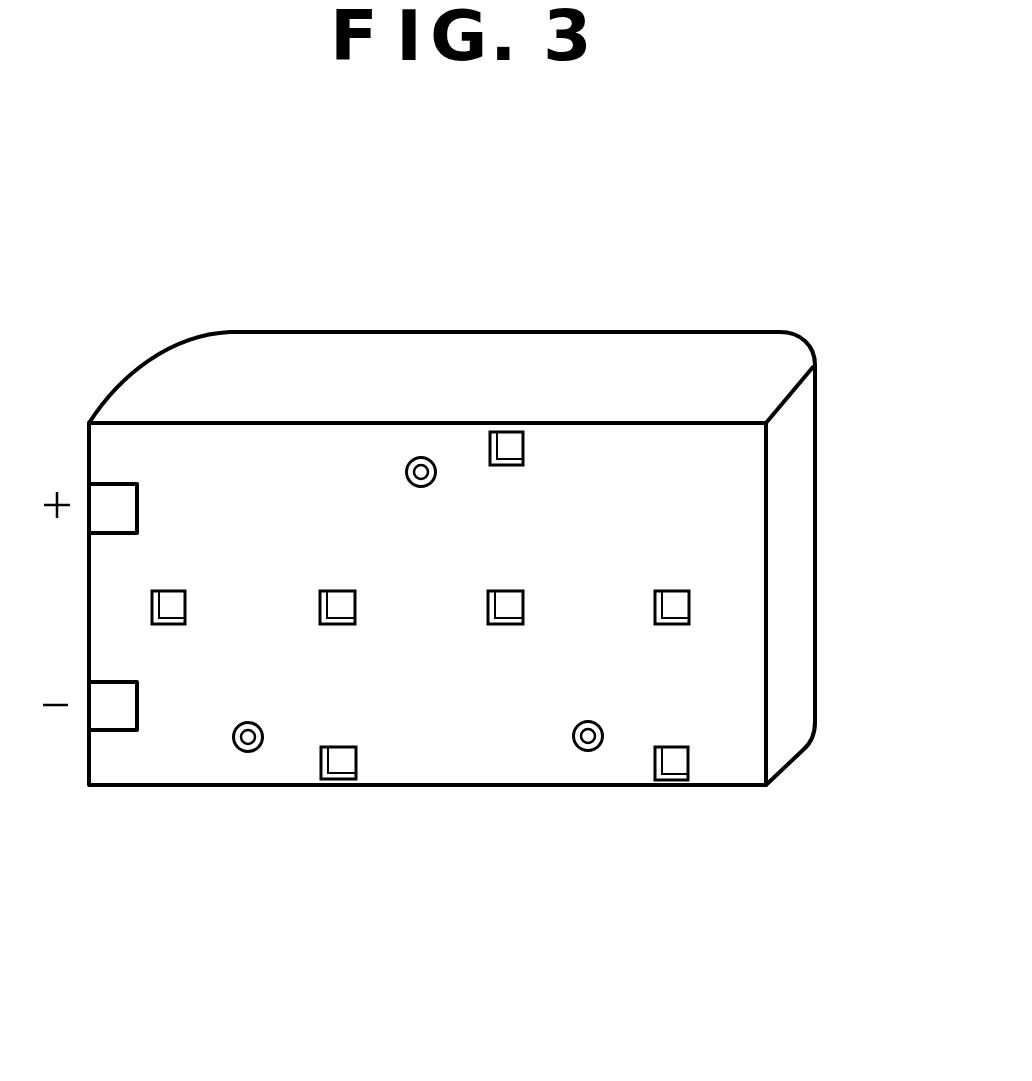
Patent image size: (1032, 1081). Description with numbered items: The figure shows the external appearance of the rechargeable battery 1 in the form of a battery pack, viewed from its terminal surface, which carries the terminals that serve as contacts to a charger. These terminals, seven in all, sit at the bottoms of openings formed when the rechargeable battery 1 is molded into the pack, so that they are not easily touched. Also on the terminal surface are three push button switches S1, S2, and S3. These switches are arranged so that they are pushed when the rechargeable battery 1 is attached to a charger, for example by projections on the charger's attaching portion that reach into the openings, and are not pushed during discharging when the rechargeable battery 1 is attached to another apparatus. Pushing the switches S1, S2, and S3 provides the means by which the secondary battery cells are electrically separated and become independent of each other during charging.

The rechargeable battery 1 is at (243, 365).
The push button switch S1 is at (250, 752).
The push button switch S2 is at (408, 461).
The push button switch S3 is at (590, 752).